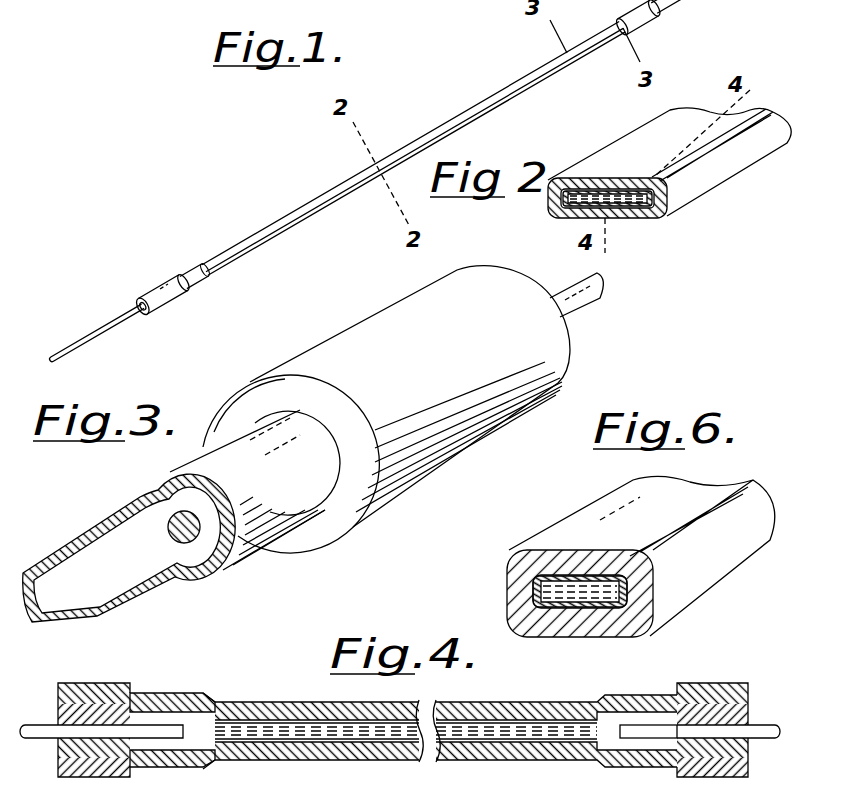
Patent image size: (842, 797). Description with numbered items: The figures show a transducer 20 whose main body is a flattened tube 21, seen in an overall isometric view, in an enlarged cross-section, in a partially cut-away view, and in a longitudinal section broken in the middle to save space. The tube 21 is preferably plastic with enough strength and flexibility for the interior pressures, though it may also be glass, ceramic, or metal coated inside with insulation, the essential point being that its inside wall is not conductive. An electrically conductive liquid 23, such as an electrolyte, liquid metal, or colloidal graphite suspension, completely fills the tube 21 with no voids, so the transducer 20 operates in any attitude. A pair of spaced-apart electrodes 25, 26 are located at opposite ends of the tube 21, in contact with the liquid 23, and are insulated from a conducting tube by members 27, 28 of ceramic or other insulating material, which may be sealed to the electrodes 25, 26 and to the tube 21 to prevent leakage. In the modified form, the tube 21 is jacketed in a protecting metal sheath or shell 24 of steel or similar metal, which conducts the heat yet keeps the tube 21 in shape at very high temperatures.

In FIG. 1, the transducer 20 is at (273, 217).
In FIG. 2, the transducer 20 is at (720, 169).
In FIG. 3, the transducer 20 is at (348, 541).
In FIG. 4, the transducer 20 is at (543, 698).
In FIG. 1, the flattened tube 21 is at (318, 213).
In FIG. 2, the flattened tube 21 is at (640, 219).
In FIG. 3, the flattened tube 21 is at (107, 610).
In FIG. 6, the flattened tube 21 is at (590, 606).
In FIG. 4, the flattened tube 21 is at (332, 707).
In FIG. 2, the electrically conductive liquid 23 is at (553, 197).
In FIG. 6, the electrically conductive liquid 23 is at (560, 590).
In FIG. 4, the electrically conductive liquid 23 is at (387, 737).
In FIG. 6, the protecting metal sheath or shell 24 is at (637, 623).
In FIG. 4, the electrode 25 is at (153, 727).
In FIG. 3, the electrode 26 is at (183, 537).
In FIG. 4, the electrode 26 is at (637, 723).
In FIG. 1, the insulating member 27 is at (134, 305).
In FIG. 4, the insulating member 27 is at (57, 750).
In FIG. 4, the insulating member 28 is at (748, 748).